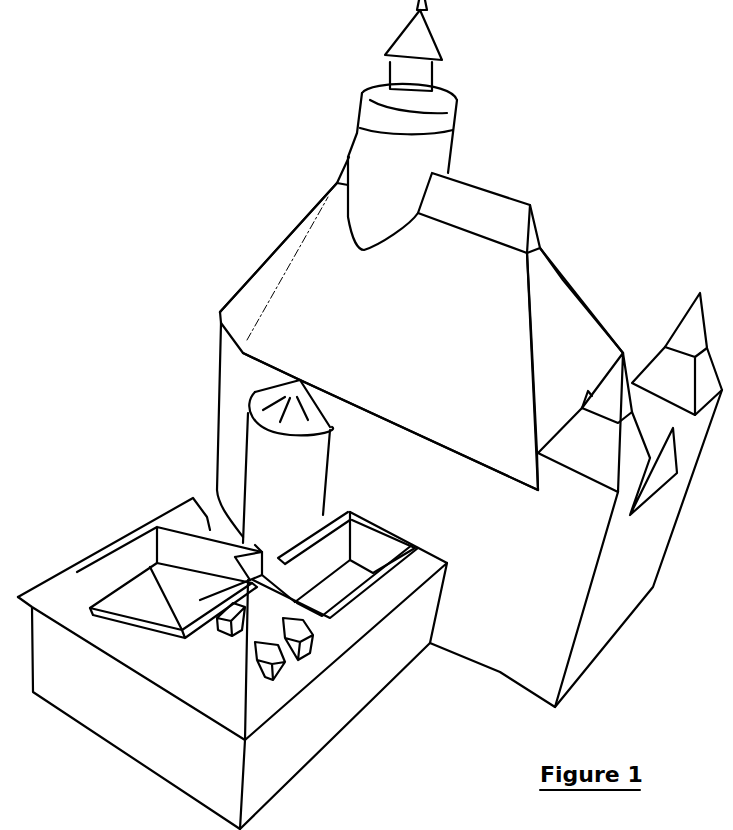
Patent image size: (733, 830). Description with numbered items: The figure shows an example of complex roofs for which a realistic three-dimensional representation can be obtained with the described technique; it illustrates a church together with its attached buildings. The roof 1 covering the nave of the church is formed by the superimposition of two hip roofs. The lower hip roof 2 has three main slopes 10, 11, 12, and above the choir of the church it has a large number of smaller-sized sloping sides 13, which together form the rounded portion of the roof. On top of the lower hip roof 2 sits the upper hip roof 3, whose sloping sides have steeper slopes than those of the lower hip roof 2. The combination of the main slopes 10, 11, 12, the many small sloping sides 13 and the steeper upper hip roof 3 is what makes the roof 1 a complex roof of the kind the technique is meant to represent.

The roof 1 is at (575, 190).
The lower hip roof 2 is at (483, 442).
The upper hip roof 3 is at (494, 206).
The main slope 10 is at (587, 302).
The main slope 11 is at (582, 362).
The main slope 12 is at (482, 352).
The smaller-sized sloping sides 13 is at (268, 257).